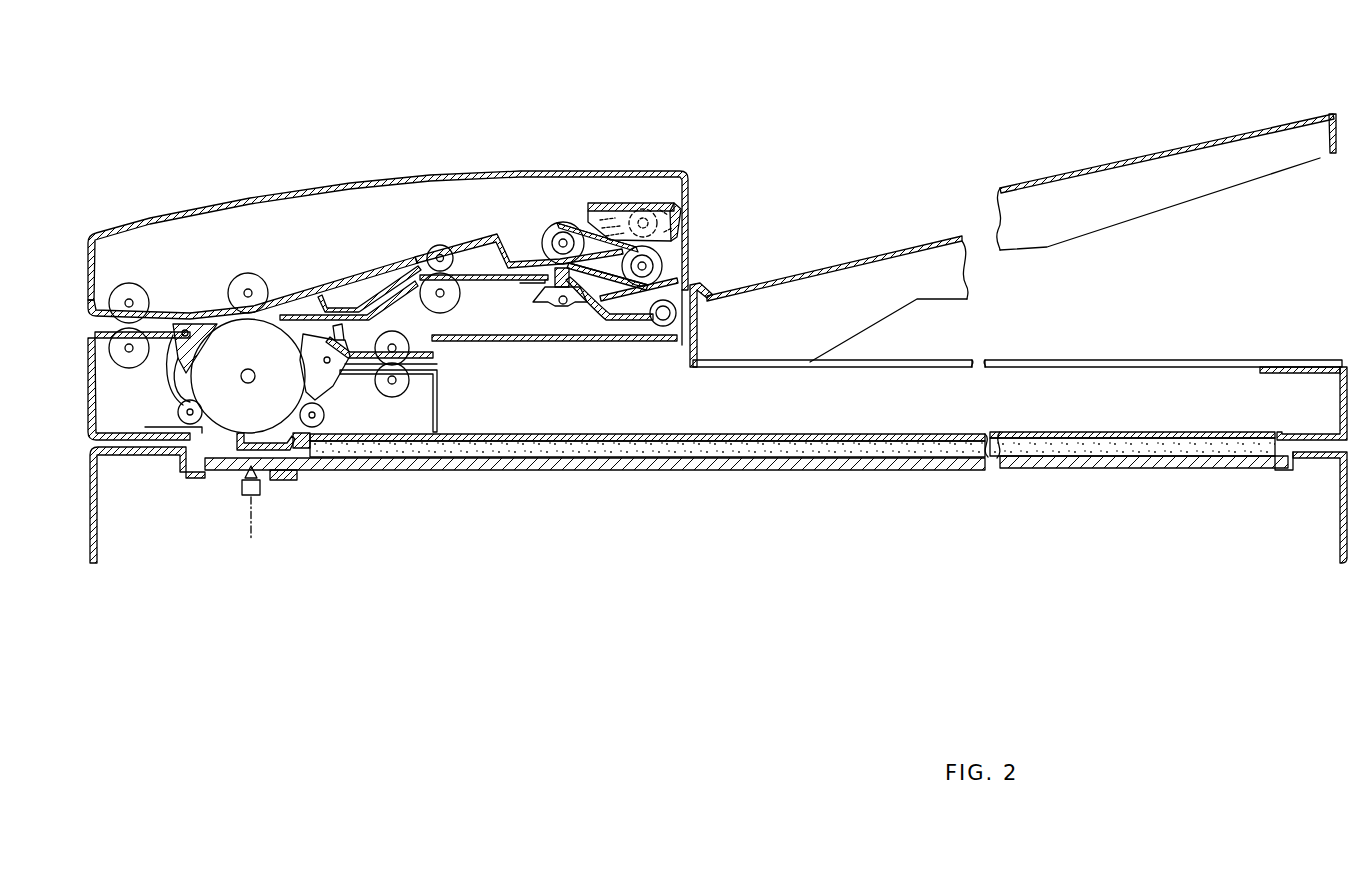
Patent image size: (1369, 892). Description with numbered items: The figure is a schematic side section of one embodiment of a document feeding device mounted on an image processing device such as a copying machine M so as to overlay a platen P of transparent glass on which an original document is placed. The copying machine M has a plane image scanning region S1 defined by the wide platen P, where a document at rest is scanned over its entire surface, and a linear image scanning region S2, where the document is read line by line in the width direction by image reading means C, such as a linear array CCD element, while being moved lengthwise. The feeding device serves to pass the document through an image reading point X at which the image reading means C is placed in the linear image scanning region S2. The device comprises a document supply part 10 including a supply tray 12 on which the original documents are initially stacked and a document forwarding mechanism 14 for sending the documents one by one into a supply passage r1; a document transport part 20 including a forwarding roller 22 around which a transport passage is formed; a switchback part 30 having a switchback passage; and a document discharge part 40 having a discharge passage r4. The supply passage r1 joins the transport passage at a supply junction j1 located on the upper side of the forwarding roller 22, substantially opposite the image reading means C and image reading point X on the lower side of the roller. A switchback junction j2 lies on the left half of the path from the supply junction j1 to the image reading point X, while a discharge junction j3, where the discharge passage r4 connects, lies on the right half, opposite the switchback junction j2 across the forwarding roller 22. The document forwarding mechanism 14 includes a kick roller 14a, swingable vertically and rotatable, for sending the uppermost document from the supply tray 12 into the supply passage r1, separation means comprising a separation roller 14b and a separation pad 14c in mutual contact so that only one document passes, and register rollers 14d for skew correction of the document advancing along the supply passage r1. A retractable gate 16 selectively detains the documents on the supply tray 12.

The document supply part 10 is at (847, 43).
The supply tray 12 is at (878, 250).
The document forwarding mechanism 14 is at (697, 101).
The kick roller 14a is at (622, 200).
The separation roller 14b is at (636, 252).
The separation pad 14c is at (549, 224).
The register rollers 14d is at (447, 246).
The retractable gate 16 is at (578, 322).
The document transport part 20 is at (240, 238).
The forwarding roller 22 is at (248, 340).
The switchback part 30 is at (118, 252).
The document discharge part 40 is at (542, 392).
The image reading means C is at (240, 488).
The image reading point X is at (246, 535).
The plane image scanning region S1 is at (432, 520).
The linear image scanning region S2 is at (268, 548).
The platen P is at (878, 457).
The copying machine M is at (537, 603).
The supply junction j1 is at (275, 312).
The switchback junction j2 is at (198, 318).
The discharge junction j3 is at (342, 365).
The supply passage r1 is at (372, 292).
The discharge passage r4 is at (425, 363).